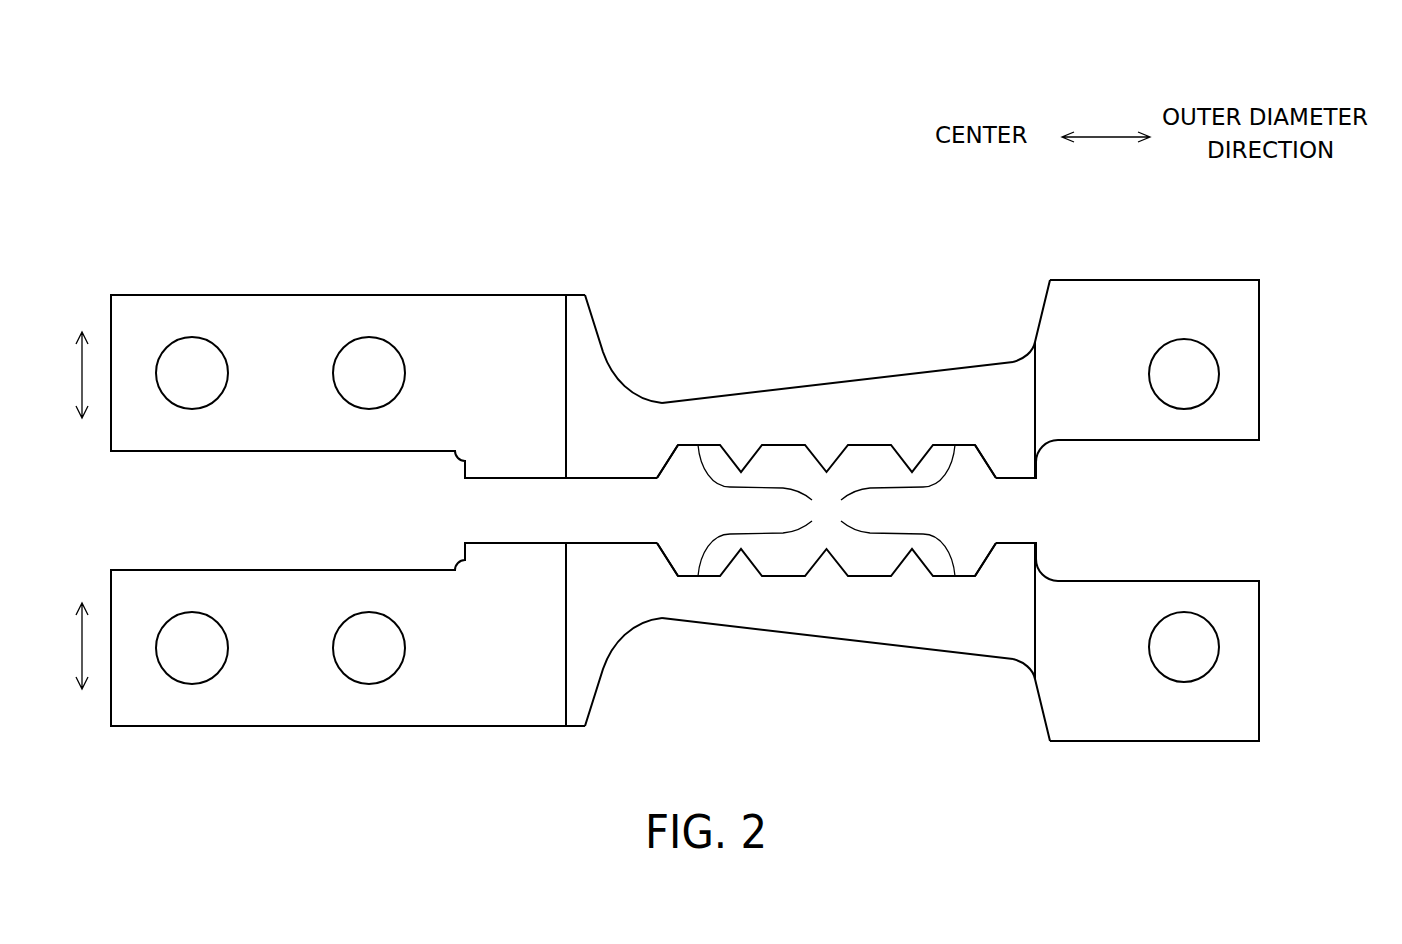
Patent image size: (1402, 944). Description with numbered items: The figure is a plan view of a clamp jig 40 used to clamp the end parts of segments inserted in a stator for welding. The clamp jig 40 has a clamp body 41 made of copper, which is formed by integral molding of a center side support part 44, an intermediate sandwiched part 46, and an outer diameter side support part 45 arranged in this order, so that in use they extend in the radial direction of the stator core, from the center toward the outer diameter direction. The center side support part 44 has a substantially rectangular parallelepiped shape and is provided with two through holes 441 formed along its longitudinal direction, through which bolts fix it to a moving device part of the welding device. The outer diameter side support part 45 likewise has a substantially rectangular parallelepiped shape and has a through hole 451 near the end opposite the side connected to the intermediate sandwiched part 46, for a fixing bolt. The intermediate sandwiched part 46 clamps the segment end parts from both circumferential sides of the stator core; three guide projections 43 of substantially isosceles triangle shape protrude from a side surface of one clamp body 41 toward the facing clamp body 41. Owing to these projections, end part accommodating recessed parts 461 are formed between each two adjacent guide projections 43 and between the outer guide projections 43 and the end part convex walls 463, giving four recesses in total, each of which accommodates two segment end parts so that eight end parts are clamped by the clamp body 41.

The clamp jig 40 is at (166, 116).
The clamp body 41 is at (935, 357).
The guide projection 43 is at (742, 455).
The center side support part 44 is at (384, 512).
The through hole 441 is at (357, 388).
The outer diameter side support part 45 is at (1171, 512).
The through hole 451 is at (1212, 370).
The intermediate sandwiched part 46 is at (817, 511).
The end part accommodating recessed part 461 is at (868, 445).
The end part convex wall 463 is at (666, 465).